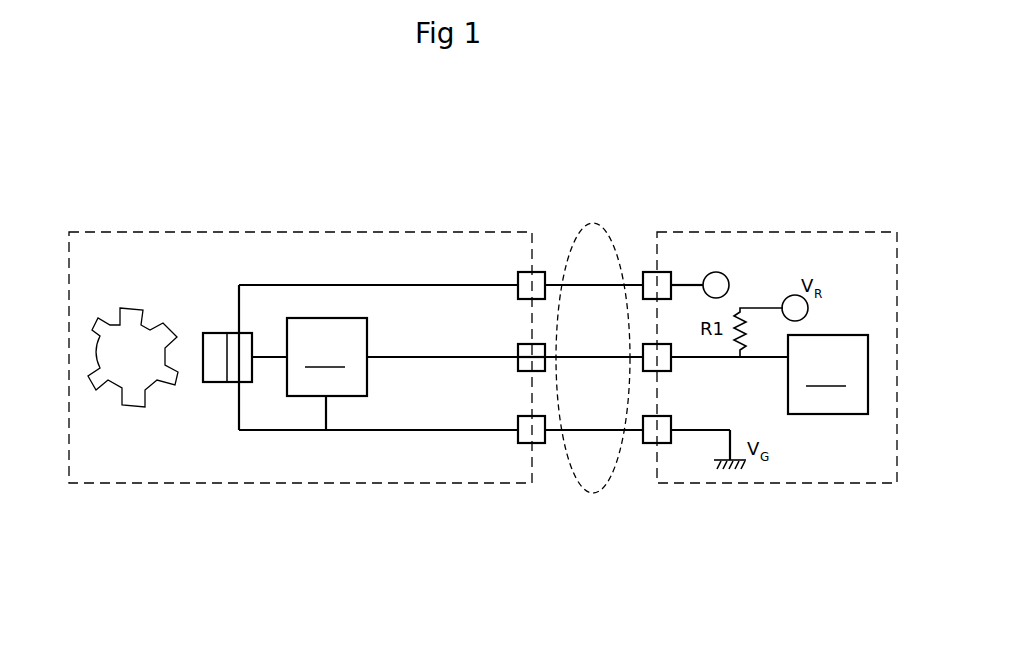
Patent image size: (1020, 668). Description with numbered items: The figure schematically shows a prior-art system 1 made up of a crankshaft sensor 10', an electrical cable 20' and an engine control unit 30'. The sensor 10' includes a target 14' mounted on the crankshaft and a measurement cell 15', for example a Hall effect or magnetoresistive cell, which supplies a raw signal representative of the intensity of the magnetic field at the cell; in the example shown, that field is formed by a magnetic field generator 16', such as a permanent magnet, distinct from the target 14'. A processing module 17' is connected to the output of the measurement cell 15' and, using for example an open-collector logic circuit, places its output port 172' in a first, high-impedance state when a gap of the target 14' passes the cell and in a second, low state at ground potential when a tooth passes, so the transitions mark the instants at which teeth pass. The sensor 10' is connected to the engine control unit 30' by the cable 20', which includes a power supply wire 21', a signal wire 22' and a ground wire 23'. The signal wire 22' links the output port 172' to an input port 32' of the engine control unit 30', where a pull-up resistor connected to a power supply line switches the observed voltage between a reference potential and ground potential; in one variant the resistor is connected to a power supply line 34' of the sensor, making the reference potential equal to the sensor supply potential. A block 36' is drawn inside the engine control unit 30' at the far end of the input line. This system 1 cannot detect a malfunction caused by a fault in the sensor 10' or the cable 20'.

The system 1 is at (180, 197).
The crankshaft sensor 10' is at (300, 306).
The target 14' is at (118, 422).
The measurement cell 15' is at (291, 298).
The magnetic field generator 16' is at (230, 286).
The processing module 17' is at (309, 374).
The output port 172' is at (448, 444).
The electrical cable 20' is at (580, 402).
The power supply wire 21' is at (594, 235).
The signal wire 22' is at (587, 282).
The ground wire 23' is at (594, 482).
The engine control unit 30' is at (777, 306).
The input port 32' is at (747, 442).
The power supply line 34' is at (712, 241).
The control unit 36' is at (828, 374).